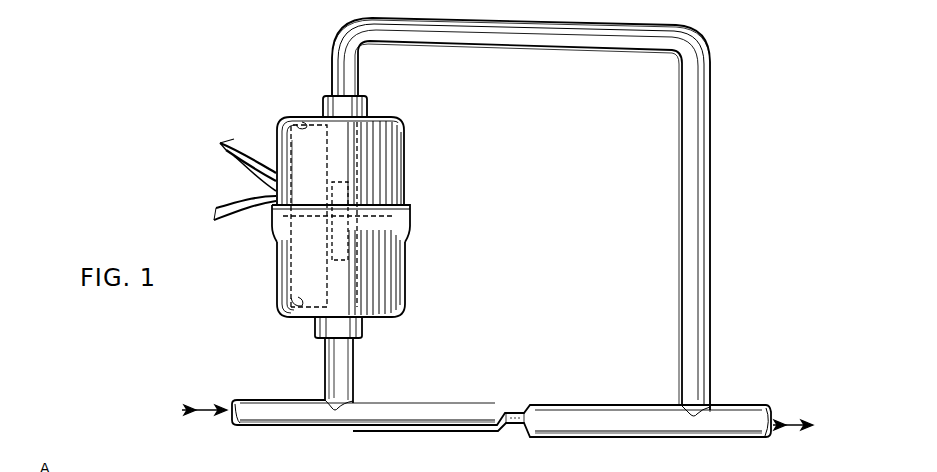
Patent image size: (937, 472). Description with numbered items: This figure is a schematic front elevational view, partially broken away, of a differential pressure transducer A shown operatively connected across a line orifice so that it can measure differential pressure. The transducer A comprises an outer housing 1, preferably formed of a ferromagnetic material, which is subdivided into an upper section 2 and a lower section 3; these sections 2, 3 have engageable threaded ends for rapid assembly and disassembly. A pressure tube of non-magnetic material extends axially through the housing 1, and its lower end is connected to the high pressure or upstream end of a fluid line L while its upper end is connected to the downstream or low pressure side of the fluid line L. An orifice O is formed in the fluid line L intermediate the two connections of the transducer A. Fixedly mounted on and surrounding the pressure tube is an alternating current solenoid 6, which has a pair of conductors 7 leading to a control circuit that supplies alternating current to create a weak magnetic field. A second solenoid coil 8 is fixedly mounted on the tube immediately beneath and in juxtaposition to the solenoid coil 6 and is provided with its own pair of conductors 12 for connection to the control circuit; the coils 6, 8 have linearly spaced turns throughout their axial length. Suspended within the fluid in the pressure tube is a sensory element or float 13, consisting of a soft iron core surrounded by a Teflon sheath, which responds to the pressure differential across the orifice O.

The outer housing 1 is at (278, 147).
The upper section 2 is at (404, 173).
The lower section 3 is at (402, 283).
The alternating current solenoid 6 is at (300, 125).
The conductors 7 is at (217, 207).
The second solenoid coil 8 is at (298, 302).
The conductors 12 is at (233, 139).
The sensory element 13 is at (331, 254).
The differential pressure transducer A is at (414, 138).
The fluid line L is at (603, 408).
The orifice O is at (518, 423).